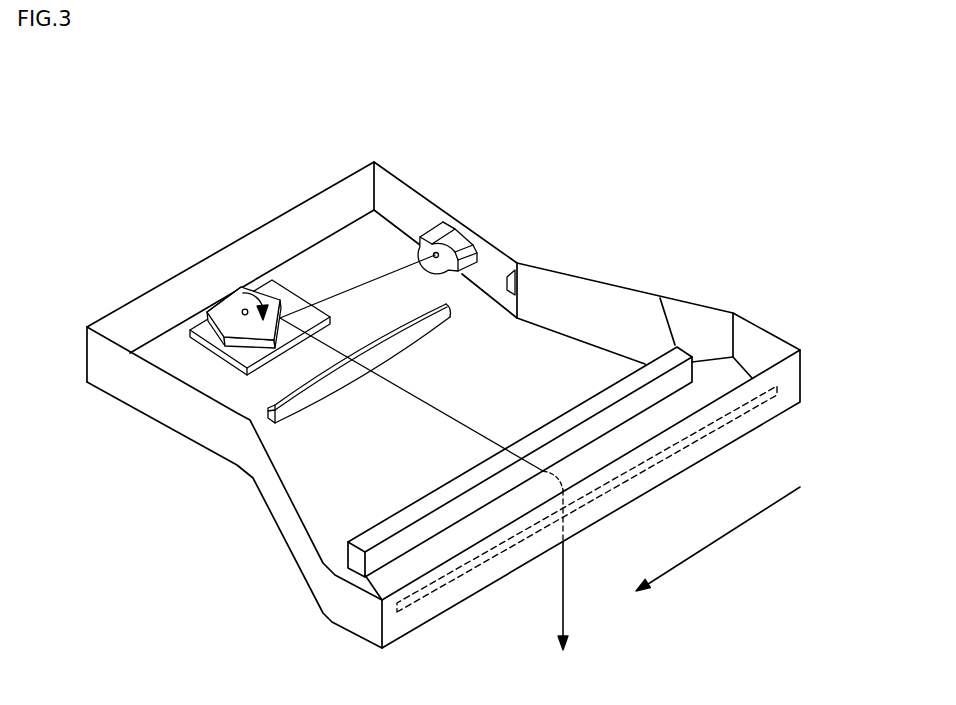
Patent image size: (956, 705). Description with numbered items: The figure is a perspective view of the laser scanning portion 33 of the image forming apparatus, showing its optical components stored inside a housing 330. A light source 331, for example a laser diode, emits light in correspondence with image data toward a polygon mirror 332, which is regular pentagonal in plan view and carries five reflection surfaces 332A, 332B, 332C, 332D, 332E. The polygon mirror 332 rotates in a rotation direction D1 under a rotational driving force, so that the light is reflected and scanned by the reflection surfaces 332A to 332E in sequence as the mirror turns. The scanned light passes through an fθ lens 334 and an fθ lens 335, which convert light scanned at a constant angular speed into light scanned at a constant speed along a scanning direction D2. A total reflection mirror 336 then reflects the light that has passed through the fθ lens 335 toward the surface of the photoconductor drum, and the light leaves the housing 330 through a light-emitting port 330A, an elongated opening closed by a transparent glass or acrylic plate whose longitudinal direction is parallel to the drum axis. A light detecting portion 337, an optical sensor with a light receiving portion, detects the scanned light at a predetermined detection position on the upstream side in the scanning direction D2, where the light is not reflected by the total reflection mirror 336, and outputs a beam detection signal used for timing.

The laser scanning portion 33 is at (529, 174).
The housing 330 is at (294, 206).
The light-emitting port 330A is at (472, 574).
The light source 331 is at (452, 232).
The polygon mirror 332 is at (224, 288).
The reflection surface 332A is at (278, 326).
The reflection surface 332B is at (273, 295).
The reflection surface 332C is at (210, 306).
The reflection surface 332D is at (214, 326).
The reflection surface 332E is at (242, 345).
The fθ lens 334 is at (267, 413).
The fθ lens 335 is at (675, 345).
The total reflection mirror 336 is at (738, 350).
The light detecting portion 337 is at (516, 272).
The rotation direction D1 is at (255, 287).
The scanning direction D2 is at (718, 543).